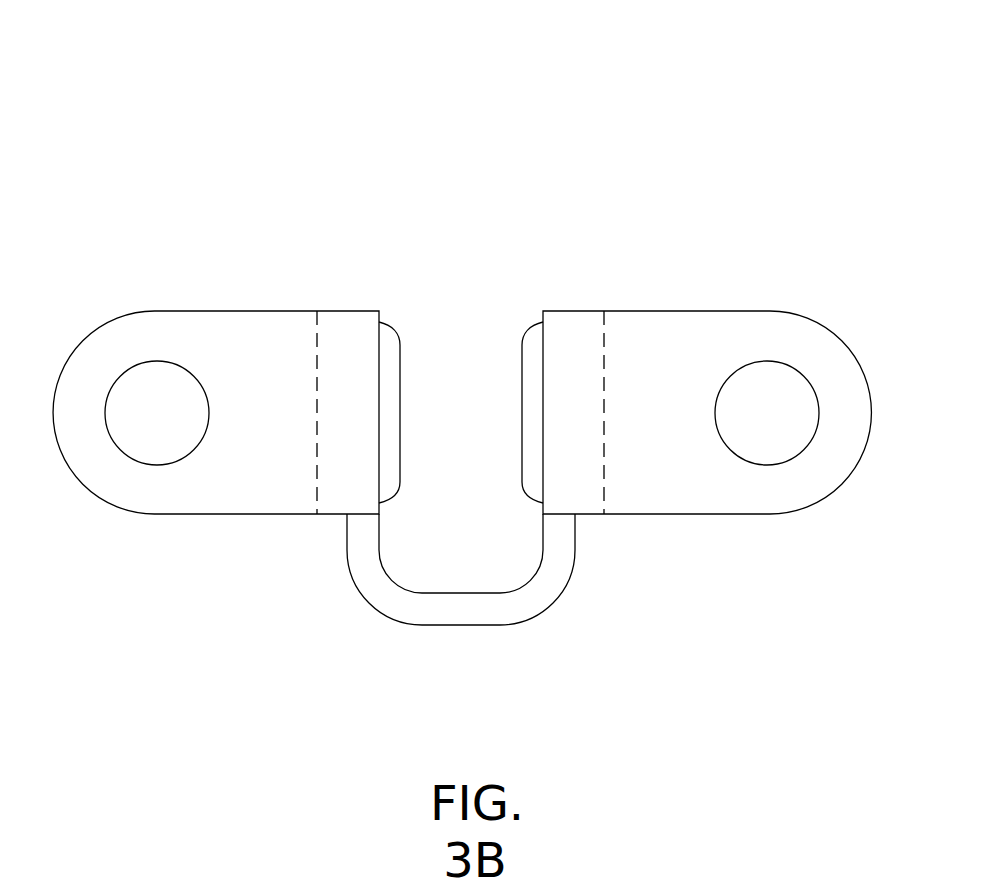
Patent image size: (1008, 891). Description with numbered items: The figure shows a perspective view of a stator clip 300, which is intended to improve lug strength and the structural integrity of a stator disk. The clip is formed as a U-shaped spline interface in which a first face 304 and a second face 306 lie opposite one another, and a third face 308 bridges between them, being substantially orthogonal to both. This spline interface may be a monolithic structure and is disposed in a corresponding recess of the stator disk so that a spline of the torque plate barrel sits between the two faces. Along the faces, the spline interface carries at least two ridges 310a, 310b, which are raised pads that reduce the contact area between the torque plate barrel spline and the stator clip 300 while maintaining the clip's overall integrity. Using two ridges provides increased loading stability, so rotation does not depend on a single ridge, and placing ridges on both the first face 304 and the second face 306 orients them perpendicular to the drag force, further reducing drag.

The stator clip 300 is at (626, 134).
The first face 304 is at (379, 505).
The second face 306 is at (543, 510).
The third face 308 is at (482, 626).
The ridge 310a is at (395, 331).
The ridge 310b is at (530, 332).